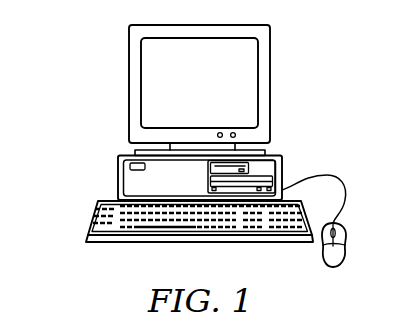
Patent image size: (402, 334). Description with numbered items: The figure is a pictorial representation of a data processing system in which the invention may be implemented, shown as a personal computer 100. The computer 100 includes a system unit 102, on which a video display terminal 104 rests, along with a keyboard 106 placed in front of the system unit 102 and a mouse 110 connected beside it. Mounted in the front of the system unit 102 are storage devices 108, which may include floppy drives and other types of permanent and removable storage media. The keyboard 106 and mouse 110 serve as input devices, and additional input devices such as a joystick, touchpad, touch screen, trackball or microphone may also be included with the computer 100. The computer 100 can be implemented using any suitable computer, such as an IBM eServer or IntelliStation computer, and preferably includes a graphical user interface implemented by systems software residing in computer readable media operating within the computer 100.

The computer 100 is at (67, 74).
The system unit 102 is at (118, 172).
The video display terminal 104 is at (270, 86).
The keyboard 106 is at (113, 241).
The storage devices 108 is at (277, 170).
The mouse 110 is at (333, 267).